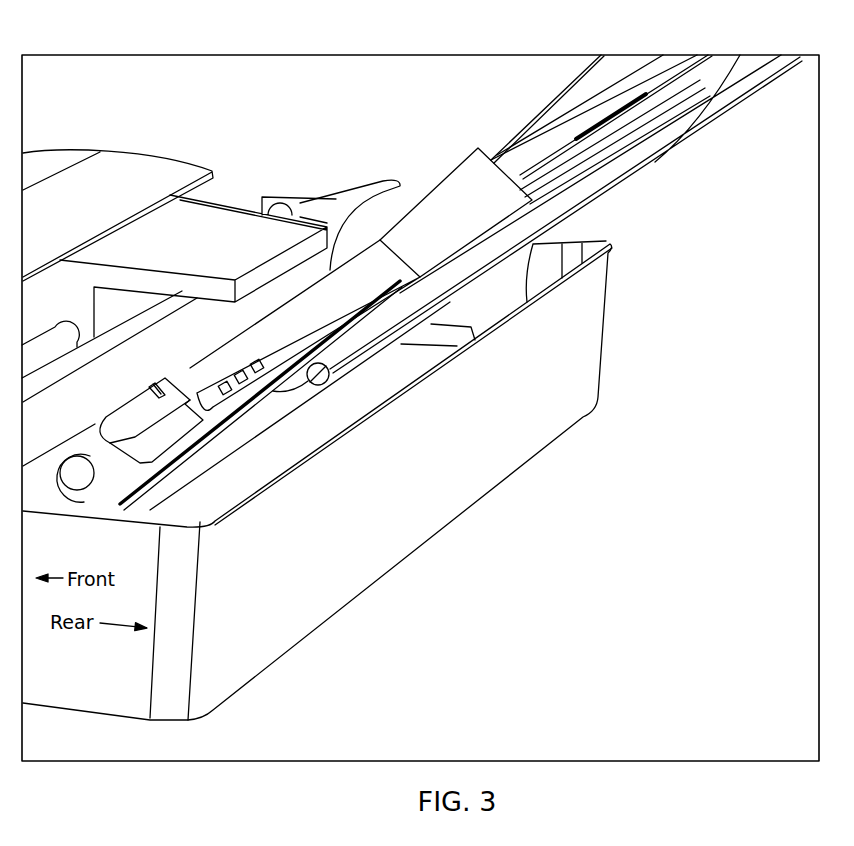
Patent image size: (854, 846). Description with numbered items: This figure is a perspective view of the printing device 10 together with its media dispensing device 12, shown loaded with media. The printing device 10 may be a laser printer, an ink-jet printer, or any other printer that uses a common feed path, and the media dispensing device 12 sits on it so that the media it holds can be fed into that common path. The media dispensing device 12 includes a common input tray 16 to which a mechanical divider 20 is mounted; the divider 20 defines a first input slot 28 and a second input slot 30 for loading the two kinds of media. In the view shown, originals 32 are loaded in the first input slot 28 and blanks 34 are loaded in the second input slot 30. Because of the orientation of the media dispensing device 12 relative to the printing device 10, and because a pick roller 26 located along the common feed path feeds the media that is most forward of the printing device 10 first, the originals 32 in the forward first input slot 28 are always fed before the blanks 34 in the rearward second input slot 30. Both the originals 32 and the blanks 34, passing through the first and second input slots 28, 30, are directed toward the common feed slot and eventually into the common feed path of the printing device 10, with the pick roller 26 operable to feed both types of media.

The printing device 10 is at (325, 537).
The media dispensing device 12 is at (684, 223).
The common input tray 16 is at (729, 103).
The mechanical divider 20 is at (497, 224).
The pick roller 26 is at (82, 476).
The first input slot 28 is at (328, 320).
The second input slot 30 is at (319, 346).
The originals 32 is at (527, 102).
The blanks 34 is at (591, 183).